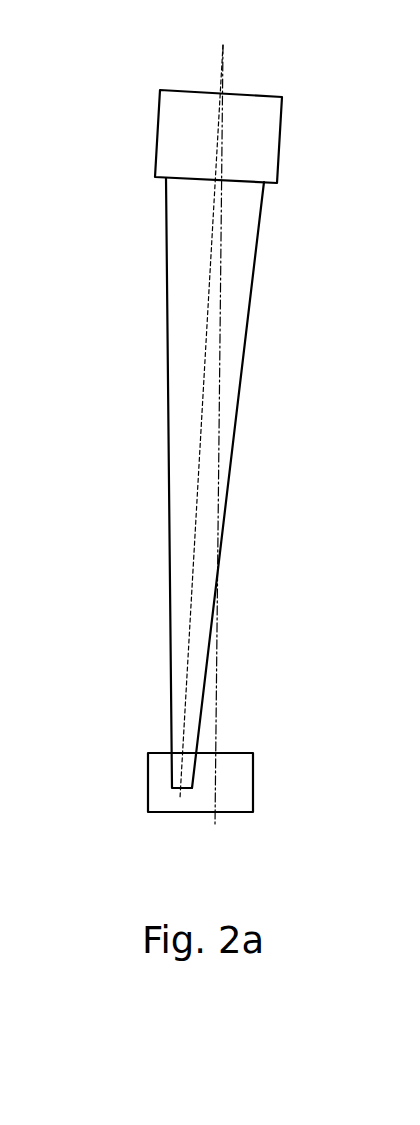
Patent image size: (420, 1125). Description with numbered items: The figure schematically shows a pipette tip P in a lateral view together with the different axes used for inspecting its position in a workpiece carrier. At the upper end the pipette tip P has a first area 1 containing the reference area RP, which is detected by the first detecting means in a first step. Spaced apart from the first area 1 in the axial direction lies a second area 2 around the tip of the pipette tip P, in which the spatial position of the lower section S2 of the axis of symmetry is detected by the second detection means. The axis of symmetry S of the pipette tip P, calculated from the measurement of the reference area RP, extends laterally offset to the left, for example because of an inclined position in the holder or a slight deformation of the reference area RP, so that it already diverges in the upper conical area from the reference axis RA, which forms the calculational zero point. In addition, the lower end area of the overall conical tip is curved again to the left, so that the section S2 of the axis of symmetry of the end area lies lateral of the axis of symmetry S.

The first area 1 is at (172, 113).
The reference area RP is at (168, 157).
The pipette tip P is at (148, 446).
The axis of symmetry S is at (206, 352).
The lower section of axis of symmetry S2 is at (185, 718).
The reference axis RA is at (217, 680).
The second area 2 is at (253, 788).